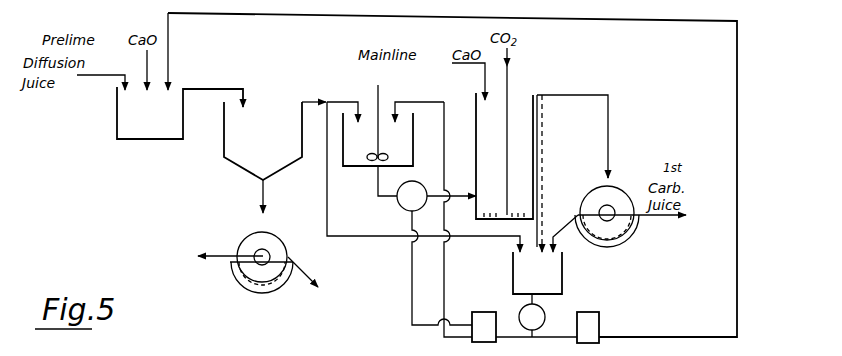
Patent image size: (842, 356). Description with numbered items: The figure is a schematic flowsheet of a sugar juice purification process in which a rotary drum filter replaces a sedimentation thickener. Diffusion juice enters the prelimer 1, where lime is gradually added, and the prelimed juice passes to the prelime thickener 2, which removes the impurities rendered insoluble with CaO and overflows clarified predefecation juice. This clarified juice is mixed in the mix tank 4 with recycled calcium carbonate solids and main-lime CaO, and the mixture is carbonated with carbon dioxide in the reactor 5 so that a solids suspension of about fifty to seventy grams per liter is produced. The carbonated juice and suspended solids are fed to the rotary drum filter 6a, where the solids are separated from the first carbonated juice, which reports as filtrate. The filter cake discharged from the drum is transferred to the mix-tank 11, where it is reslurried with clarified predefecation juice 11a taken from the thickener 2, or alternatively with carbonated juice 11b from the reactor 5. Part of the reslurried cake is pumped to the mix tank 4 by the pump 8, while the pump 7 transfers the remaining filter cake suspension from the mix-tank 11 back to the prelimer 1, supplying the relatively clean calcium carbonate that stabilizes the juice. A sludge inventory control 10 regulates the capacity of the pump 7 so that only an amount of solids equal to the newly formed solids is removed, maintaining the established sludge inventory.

The prelimer 1 is at (150, 126).
The prelime thickener 2 is at (268, 146).
The mix tank 4 is at (361, 158).
The reactor 5 is at (491, 171).
The rotary drum filter 6a is at (632, 236).
The pump 7 is at (588, 327).
The pump 8 is at (484, 327).
The sludge inventory control 10 is at (532, 315).
The mix-tank 11 is at (540, 288).
The clarified predefecation juice 11a is at (326, 205).
The carbonated juice 11b is at (543, 148).